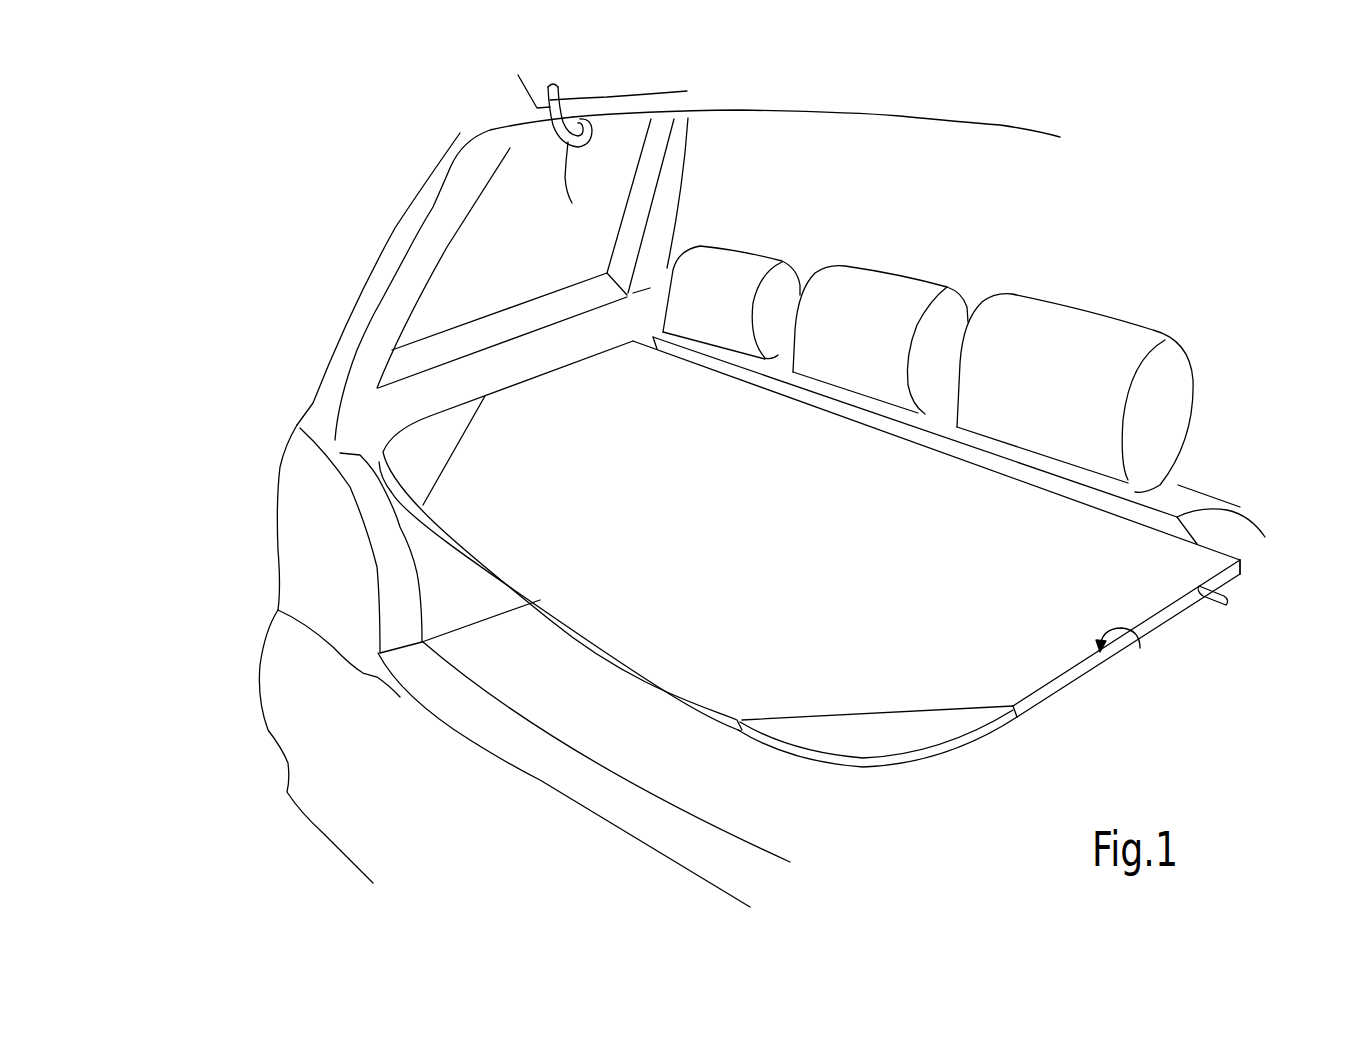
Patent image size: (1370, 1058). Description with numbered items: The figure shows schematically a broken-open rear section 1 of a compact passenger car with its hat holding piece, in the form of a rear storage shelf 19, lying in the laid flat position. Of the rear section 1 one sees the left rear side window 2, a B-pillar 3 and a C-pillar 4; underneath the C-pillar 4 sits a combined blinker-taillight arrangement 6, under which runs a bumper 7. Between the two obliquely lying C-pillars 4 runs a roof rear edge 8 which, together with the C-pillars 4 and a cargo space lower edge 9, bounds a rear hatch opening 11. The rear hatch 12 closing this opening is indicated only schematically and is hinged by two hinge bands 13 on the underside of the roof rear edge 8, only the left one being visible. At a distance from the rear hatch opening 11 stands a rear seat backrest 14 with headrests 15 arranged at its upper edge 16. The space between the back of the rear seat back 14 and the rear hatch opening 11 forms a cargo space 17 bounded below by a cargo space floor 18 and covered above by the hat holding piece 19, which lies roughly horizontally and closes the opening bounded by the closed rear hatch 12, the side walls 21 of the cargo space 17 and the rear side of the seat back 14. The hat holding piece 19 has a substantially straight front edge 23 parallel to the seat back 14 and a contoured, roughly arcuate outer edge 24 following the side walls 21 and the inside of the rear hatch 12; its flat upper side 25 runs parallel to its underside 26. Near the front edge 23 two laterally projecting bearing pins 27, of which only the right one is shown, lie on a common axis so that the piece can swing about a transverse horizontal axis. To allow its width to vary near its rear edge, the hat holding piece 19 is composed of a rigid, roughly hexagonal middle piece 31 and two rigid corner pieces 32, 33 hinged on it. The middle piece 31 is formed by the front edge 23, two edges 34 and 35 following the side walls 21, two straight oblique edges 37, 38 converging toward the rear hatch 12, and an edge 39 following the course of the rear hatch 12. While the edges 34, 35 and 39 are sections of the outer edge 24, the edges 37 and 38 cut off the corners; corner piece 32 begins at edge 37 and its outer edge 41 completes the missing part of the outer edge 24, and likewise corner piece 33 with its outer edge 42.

The rear section 1 is at (343, 187).
The rear side window 2 is at (548, 268).
The B-pillar 3 is at (664, 225).
The C-pillar 4 is at (417, 260).
The combined blinker-taillight arrangement 6 is at (307, 533).
The bumper 7 is at (413, 815).
The roof rear edge 8 is at (971, 126).
The cargo space lower edge 9 is at (585, 793).
The rear hatch opening 11 is at (432, 312).
The rear hatch 12 is at (522, 92).
The hinge band 13 is at (578, 147).
The rear seat backrest 14 is at (1221, 528).
The headrests 15 is at (740, 282).
The upper edge 16 is at (1172, 495).
The cargo space 17 is at (790, 773).
The cargo space floor 18 is at (560, 690).
The rear storage shelf 19 is at (700, 722).
The side walls 21 is at (466, 612).
The front edge 23 is at (1247, 563).
The outer edge 24 is at (1060, 690).
The upper side 25 is at (1140, 660).
The underside 26 is at (1176, 626).
The bearing pin 27 is at (1232, 596).
The middle piece 31 is at (797, 555).
The corner piece 32 is at (426, 465).
The corner piece 33 is at (896, 745).
The edge 34 is at (562, 368).
The edge 35 is at (1083, 667).
The edge 37 is at (453, 462).
The edge 38 is at (840, 713).
The edge 39 is at (572, 632).
The outer edge 41 is at (440, 408).
The outer edge 42 is at (948, 752).